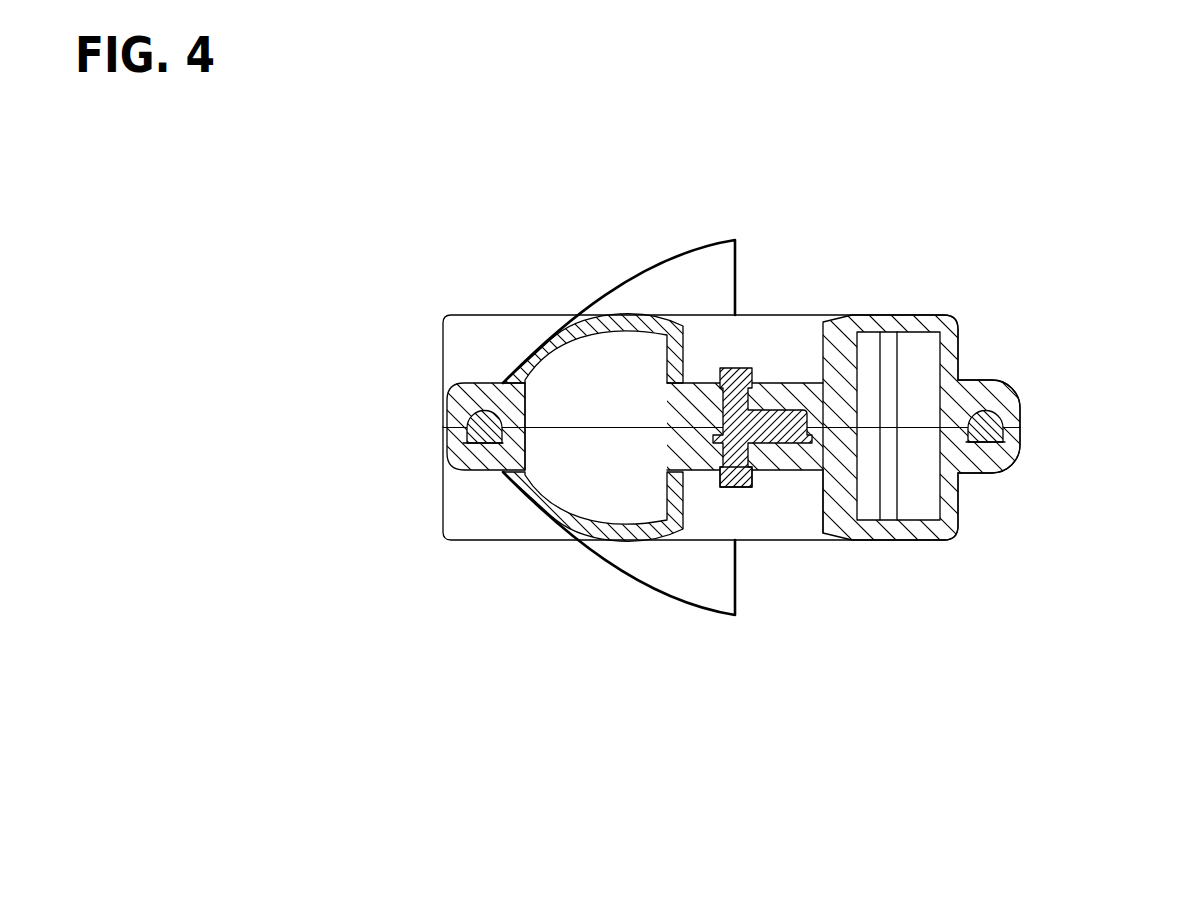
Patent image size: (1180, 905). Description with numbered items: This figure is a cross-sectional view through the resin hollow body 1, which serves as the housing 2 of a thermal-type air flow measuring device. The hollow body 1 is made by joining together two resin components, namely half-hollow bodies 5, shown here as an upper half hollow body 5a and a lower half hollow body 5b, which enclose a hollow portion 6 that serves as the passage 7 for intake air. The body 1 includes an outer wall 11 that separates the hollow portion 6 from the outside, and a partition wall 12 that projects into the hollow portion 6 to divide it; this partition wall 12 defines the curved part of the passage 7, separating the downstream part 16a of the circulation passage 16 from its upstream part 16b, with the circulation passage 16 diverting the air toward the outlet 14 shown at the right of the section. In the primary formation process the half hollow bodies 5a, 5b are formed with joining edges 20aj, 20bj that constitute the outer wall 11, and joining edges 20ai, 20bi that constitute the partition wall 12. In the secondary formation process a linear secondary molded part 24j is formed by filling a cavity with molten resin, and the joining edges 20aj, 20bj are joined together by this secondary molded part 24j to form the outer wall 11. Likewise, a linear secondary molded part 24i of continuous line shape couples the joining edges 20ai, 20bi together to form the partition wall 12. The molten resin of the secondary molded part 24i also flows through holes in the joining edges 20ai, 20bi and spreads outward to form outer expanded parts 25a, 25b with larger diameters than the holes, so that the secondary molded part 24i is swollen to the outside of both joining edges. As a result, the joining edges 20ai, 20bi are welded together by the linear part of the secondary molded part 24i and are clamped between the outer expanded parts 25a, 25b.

The hollow body 1 is at (740, 420).
The housing 2 is at (740, 420).
The resin components (half-hollow bodies) 5 is at (700, 430).
The half hollow body 5a is at (520, 328).
The half hollow body 5b is at (513, 533).
The hollow portion 6 is at (660, 372).
The passage 7 is at (553, 382).
The outer wall 11 is at (1063, 429).
The partition wall 12 is at (892, 435).
The outlet 14 is at (737, 272).
The circulation passage 16 is at (716, 387).
The downstream part 16a is at (557, 477).
The upstream part 16b is at (931, 364).
The joining edge 20ai is at (793, 390).
The joining edge 20bi is at (798, 453).
The joining edge 20aj is at (997, 400).
The joining edge 20bj is at (988, 456).
The secondary molded part 24i is at (798, 428).
The secondary molded part 24j is at (466, 413).
The outer expanded part 25a is at (742, 368).
The outer expanded part 25b is at (743, 478).